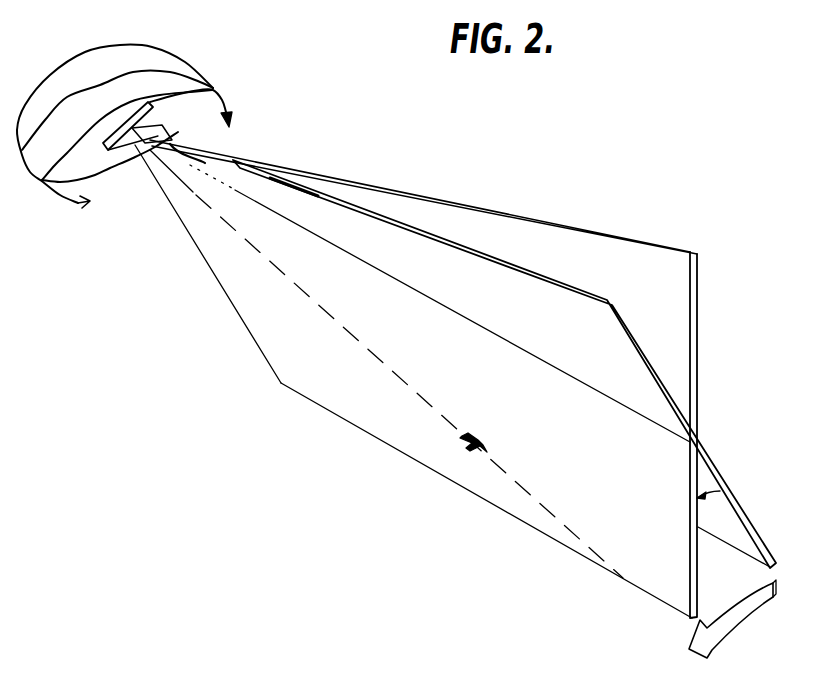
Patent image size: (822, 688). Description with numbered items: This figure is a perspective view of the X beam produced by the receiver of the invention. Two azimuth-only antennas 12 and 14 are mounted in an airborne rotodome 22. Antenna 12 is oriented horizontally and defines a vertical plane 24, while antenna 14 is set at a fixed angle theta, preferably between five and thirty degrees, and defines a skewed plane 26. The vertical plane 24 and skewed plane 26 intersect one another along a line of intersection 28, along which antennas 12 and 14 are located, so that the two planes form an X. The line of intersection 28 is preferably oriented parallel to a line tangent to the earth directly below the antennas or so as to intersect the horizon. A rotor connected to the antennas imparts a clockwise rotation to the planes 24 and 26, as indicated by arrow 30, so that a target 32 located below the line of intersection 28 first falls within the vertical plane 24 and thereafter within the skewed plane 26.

The antenna 12 is at (165, 128).
The antenna 14 is at (213, 88).
The airborne rotodome 22 is at (177, 60).
The vertical plane 24 is at (697, 283).
The skewed plane 26 is at (767, 548).
The line of intersection 28 is at (607, 400).
The arrow 30 is at (747, 620).
The target 32 is at (480, 443).